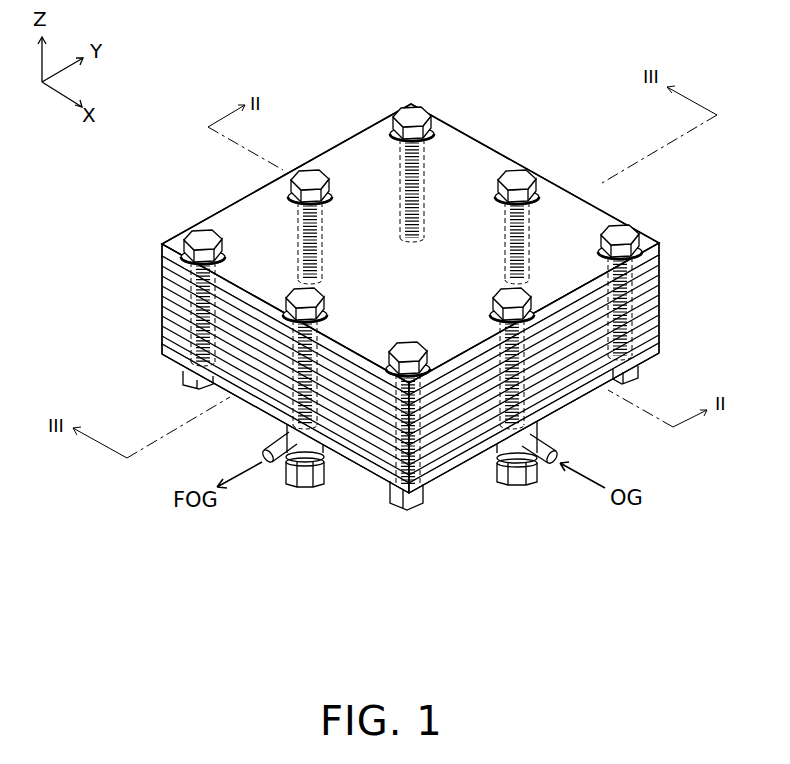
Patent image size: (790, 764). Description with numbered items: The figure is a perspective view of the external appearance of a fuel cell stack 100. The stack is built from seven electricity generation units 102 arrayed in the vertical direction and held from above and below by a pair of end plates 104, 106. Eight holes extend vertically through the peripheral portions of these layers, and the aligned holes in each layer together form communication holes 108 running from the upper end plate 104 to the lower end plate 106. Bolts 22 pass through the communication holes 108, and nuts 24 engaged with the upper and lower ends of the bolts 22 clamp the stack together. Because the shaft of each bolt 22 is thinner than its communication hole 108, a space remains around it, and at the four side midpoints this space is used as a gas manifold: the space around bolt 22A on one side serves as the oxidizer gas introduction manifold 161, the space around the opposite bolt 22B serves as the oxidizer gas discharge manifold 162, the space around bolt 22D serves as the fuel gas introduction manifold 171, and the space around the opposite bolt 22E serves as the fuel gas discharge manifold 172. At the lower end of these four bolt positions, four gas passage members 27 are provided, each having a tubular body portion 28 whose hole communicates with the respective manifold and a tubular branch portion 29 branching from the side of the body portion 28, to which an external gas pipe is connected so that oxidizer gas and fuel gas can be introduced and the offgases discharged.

The fuel cell stack 100 is at (510, 55).
The electricity generation unit 102 is at (660, 340).
The end plate 104 is at (662, 249).
The end plate 106 is at (660, 349).
The communication hole 108 is at (222, 243).
The oxidizer gas introduction manifold 161 is at (530, 305).
The oxidizer gas discharge manifold 162 is at (288, 182).
The fuel gas introduction manifold 171 is at (535, 200).
The fuel gas discharge manifold 172 is at (320, 313).
The bolt 22 is at (190, 258).
The bolt 22A is at (530, 388).
The bolt 22B is at (320, 208).
The bolt 22D is at (525, 217).
The bolt 22E is at (316, 327).
The nut 24 is at (200, 228).
The gas passage member 27 is at (218, 417).
The body portion 28 is at (288, 440).
The branch portion 29 is at (272, 450).